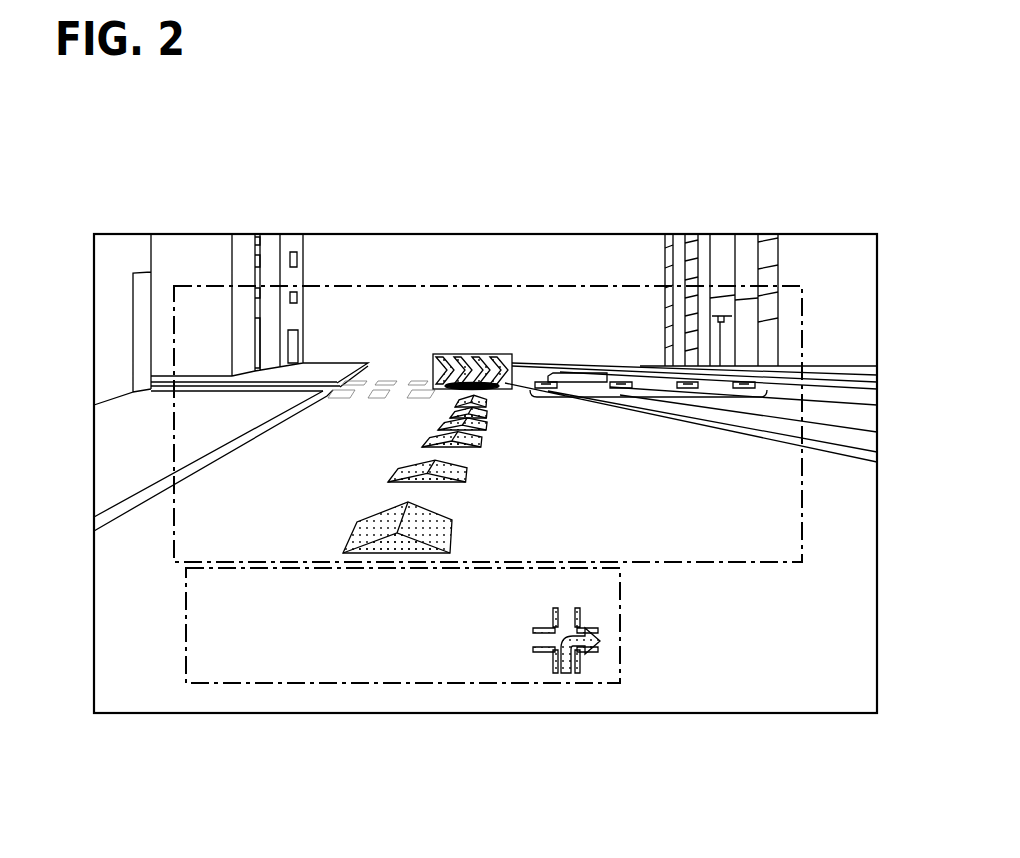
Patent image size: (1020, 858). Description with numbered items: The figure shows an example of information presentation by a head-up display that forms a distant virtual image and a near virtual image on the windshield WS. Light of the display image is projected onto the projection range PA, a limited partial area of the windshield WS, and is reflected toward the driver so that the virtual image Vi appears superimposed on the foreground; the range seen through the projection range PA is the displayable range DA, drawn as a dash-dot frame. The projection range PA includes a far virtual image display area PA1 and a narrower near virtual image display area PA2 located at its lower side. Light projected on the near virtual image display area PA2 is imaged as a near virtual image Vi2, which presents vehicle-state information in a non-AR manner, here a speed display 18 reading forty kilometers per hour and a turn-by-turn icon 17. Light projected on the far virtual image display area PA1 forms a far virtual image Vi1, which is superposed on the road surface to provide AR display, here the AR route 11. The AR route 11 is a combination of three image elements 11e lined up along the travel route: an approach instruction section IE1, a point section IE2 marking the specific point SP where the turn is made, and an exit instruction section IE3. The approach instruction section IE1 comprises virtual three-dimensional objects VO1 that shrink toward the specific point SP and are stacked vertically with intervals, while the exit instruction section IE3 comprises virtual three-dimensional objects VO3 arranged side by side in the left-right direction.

The windshield WS is at (127, 281).
The displayable range DA is at (748, 285).
The projection range PA is at (712, 783).
The far virtual image display area PA1 is at (658, 562).
The near virtual image display area PA2 is at (605, 683).
The virtual image Vi is at (465, 783).
The far virtual image Vi1 is at (411, 564).
The near virtual image Vi2 is at (314, 679).
The virtual three-dimensional object VO1 is at (410, 443).
The virtual three-dimensional object VO3 is at (674, 374).
The specific point SP is at (431, 371).
The AR route 11 is at (485, 398).
The image element 11e is at (426, 426).
The approach instruction section IE1 is at (523, 435).
The point section IE2 is at (506, 393).
The exit instruction section IE3 is at (612, 390).
The turn-by-turn icon 17 is at (563, 673).
The speed display 18 is at (235, 673).